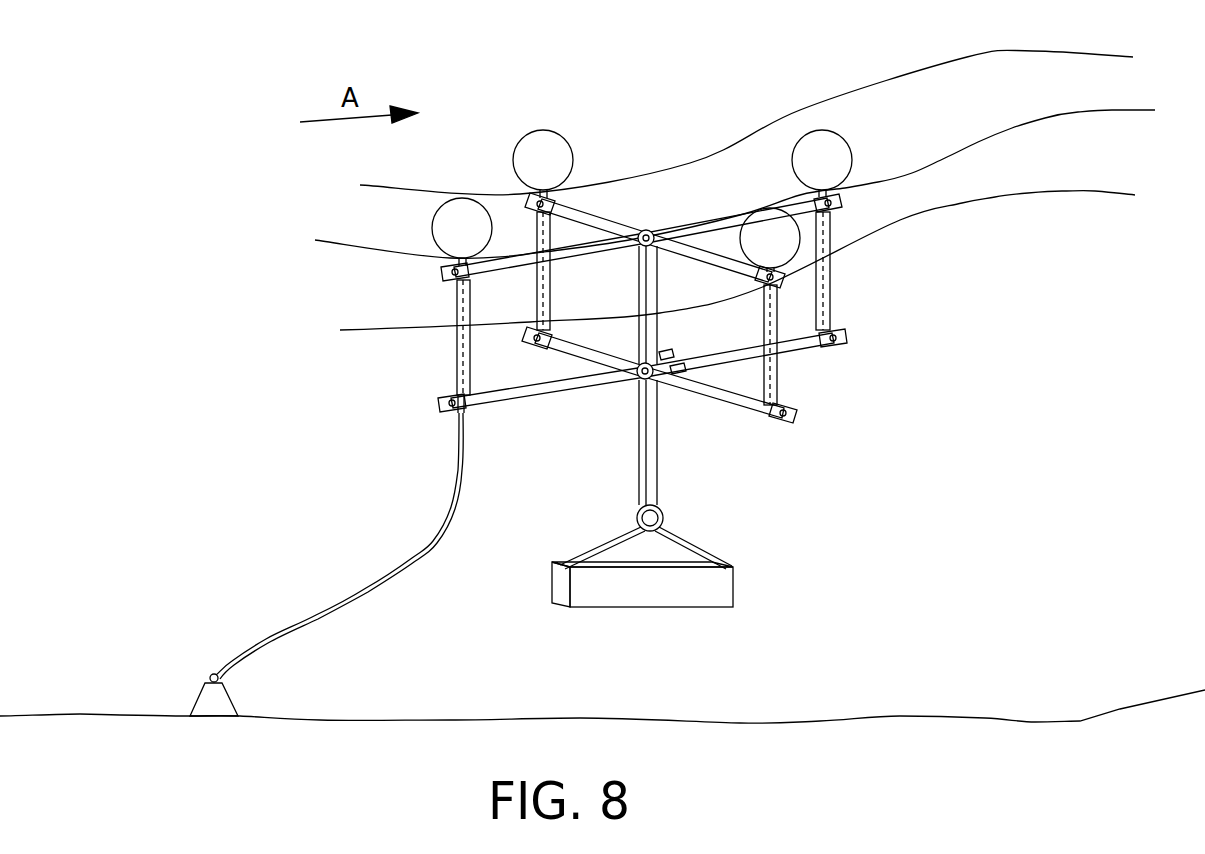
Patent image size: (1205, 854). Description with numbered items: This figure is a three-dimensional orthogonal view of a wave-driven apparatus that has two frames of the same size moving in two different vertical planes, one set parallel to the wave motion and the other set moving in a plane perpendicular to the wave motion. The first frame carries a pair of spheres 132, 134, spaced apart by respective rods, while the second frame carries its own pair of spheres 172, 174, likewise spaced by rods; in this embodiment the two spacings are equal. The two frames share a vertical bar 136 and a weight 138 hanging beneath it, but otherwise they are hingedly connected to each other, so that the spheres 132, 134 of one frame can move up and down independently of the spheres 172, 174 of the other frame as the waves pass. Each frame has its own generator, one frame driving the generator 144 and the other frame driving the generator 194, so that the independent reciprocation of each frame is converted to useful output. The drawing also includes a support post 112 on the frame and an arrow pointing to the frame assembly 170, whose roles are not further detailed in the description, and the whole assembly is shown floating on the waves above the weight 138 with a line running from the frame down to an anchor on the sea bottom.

The support post 112 is at (823, 264).
The sphere 132 is at (440, 226).
The sphere 134 is at (836, 160).
The vertical bar 136 is at (639, 300).
The weight 138 is at (740, 590).
The generator 144 is at (683, 366).
The frame assembly 170 is at (800, 394).
The sphere 172 is at (568, 157).
The sphere 174 is at (787, 233).
The generator 194 is at (665, 352).